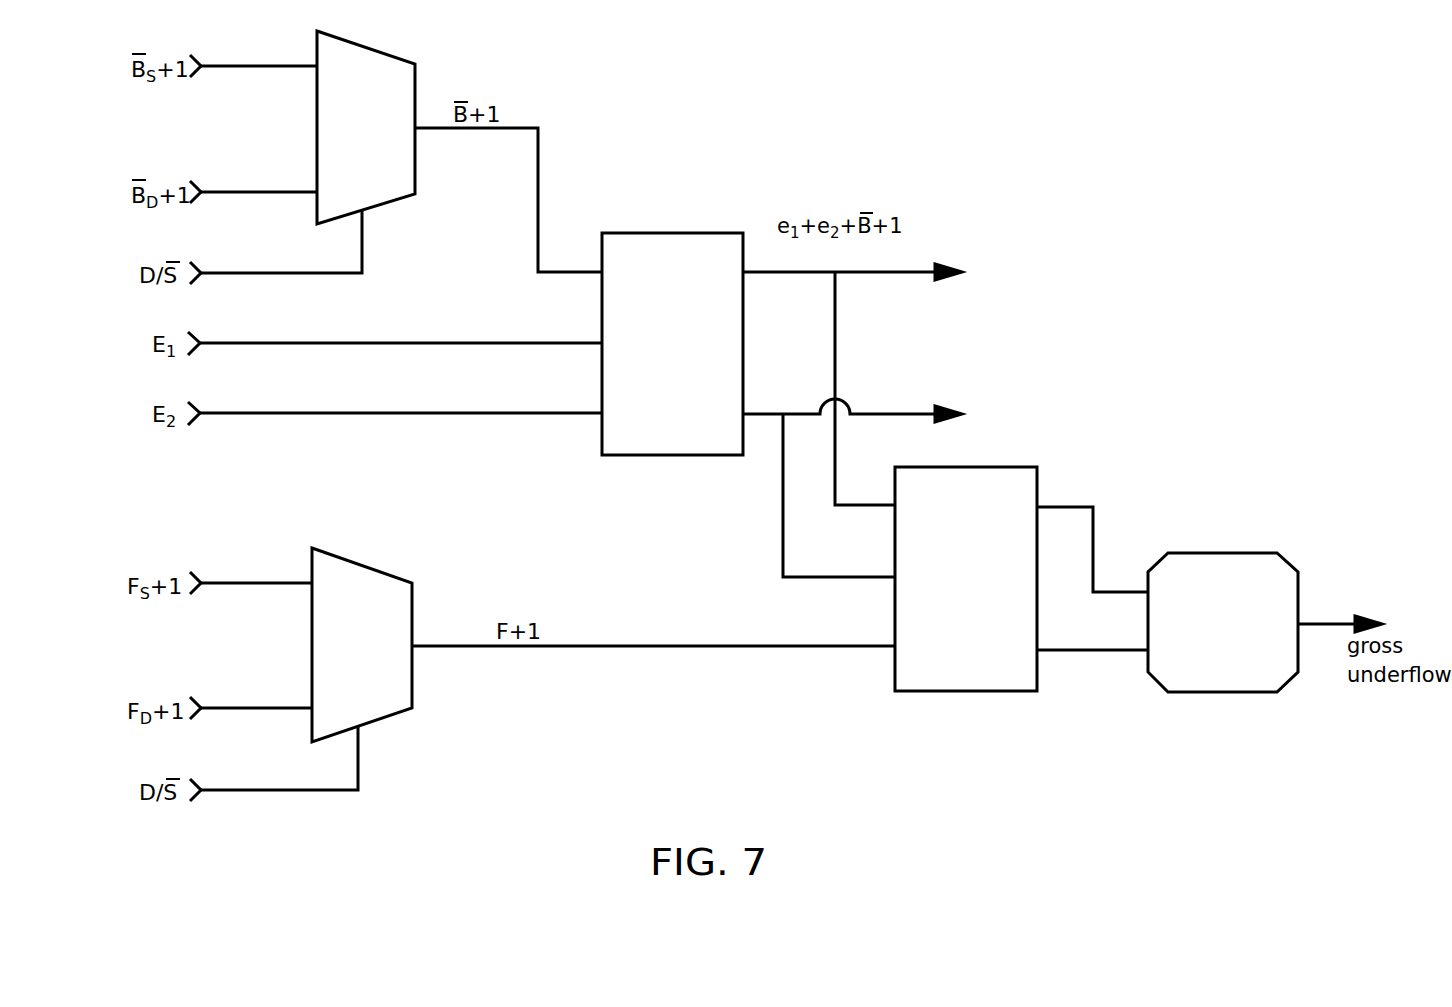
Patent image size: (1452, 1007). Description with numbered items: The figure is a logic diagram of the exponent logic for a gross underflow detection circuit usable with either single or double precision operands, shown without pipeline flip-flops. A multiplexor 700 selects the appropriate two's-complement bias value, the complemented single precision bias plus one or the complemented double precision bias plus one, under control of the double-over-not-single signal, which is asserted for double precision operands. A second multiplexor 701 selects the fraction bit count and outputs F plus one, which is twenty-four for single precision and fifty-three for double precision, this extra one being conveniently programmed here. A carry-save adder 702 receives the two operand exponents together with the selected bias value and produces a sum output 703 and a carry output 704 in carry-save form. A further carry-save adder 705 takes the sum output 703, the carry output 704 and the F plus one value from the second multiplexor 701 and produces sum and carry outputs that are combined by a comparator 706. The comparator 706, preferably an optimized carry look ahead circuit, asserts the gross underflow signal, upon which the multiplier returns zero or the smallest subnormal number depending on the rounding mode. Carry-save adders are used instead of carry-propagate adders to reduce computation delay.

The multiplexor 700 is at (370, 47).
The second multiplexor 701 is at (365, 566).
The carry-save adder 702 is at (645, 233).
The sum output 703 is at (857, 508).
The carry output 704 is at (783, 490).
The carry-save adder 705 is at (984, 691).
The comparator 706 is at (1222, 692).